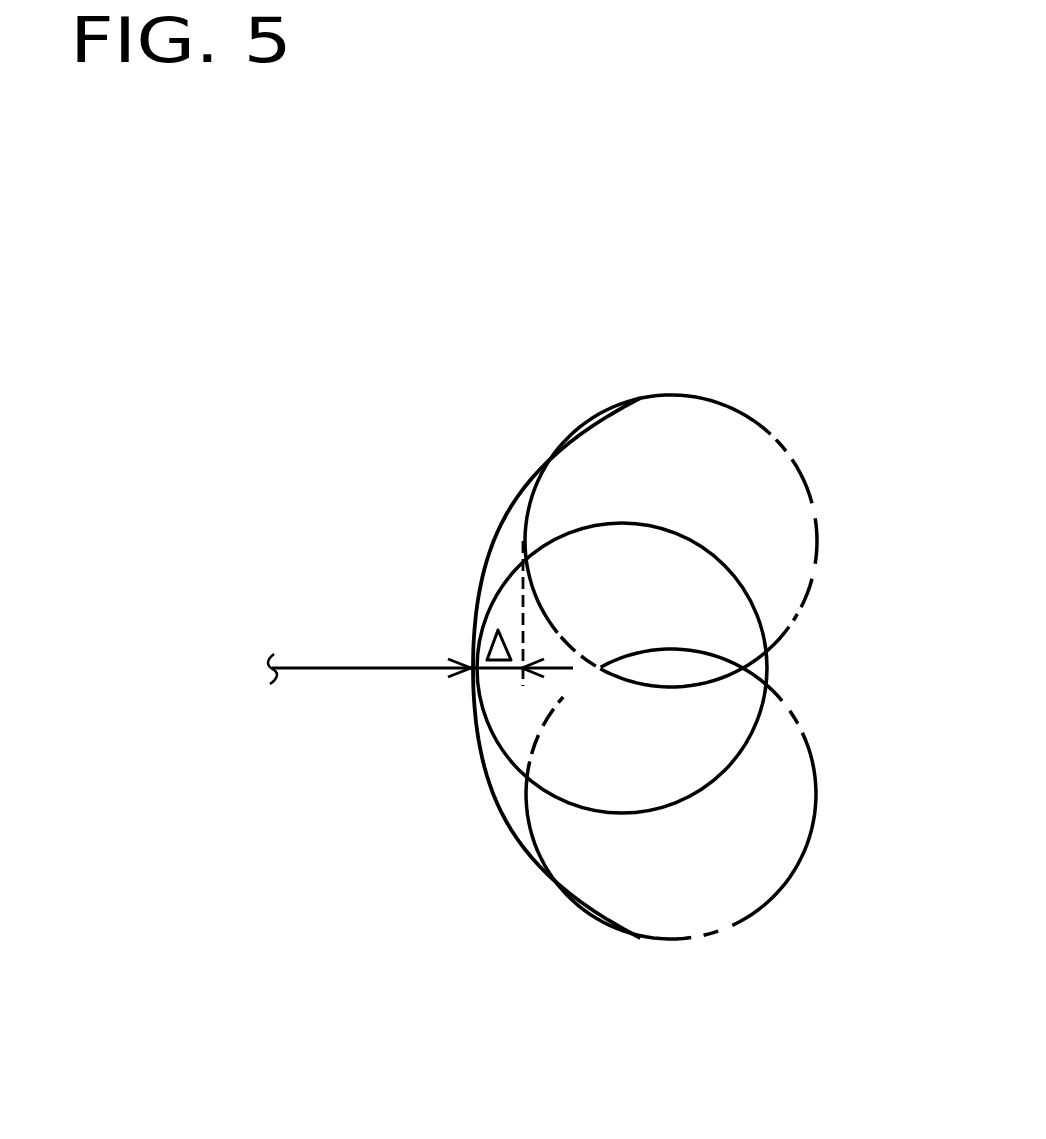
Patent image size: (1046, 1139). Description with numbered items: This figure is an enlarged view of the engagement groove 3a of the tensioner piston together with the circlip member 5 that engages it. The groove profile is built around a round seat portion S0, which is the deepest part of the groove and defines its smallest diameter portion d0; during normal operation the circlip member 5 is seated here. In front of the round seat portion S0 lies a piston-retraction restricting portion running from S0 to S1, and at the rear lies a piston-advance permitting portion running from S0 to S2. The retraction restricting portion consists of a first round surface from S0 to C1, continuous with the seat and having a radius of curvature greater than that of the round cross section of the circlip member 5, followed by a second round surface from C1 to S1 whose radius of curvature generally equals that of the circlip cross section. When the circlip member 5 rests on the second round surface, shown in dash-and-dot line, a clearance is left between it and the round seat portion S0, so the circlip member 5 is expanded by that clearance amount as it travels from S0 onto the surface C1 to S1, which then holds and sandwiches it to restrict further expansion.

The engagement groove 3a is at (494, 794).
The circlip member 5 is at (768, 663).
The round seat portion S0 is at (438, 705).
The end point of the piston-retraction restricting portion S1 is at (671, 541).
The end point of the piston-advance permitting portion S2 is at (618, 957).
The junction point between the first and second round surfaces C1 is at (632, 399).
The smallest diameter portion d0 is at (420, 655).